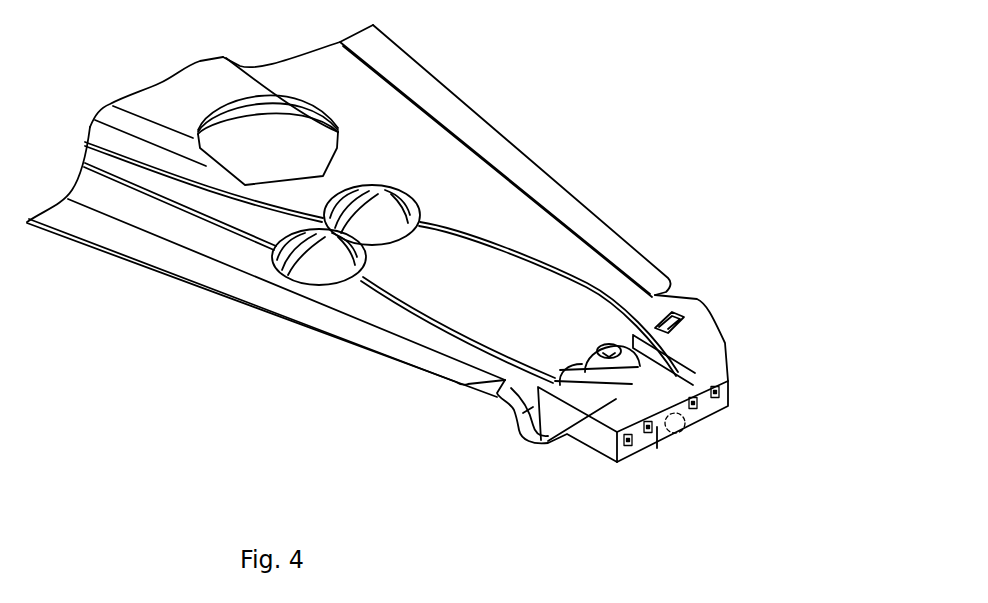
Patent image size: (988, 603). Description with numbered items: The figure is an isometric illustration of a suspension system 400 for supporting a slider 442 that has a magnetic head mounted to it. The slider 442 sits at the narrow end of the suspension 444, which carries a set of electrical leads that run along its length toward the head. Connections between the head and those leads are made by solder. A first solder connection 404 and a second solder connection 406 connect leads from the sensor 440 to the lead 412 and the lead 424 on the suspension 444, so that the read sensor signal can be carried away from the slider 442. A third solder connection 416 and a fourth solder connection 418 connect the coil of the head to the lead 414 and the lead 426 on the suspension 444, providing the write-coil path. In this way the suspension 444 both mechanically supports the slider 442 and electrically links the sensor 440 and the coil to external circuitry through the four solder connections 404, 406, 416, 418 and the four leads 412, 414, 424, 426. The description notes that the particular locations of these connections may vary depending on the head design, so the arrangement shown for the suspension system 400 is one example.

The suspension system 400 is at (488, 273).
The first solder connection 404 is at (610, 453).
The second solder connection 406 is at (643, 447).
The lead 412 is at (392, 302).
The lead 414 is at (587, 284).
The third solder connection 416 is at (717, 390).
The fourth solder connection 418 is at (700, 412).
The lead 424 is at (440, 318).
The lead 426 is at (498, 250).
The sensor 440 is at (686, 433).
The slider 442 is at (563, 448).
The suspension 444 is at (524, 146).